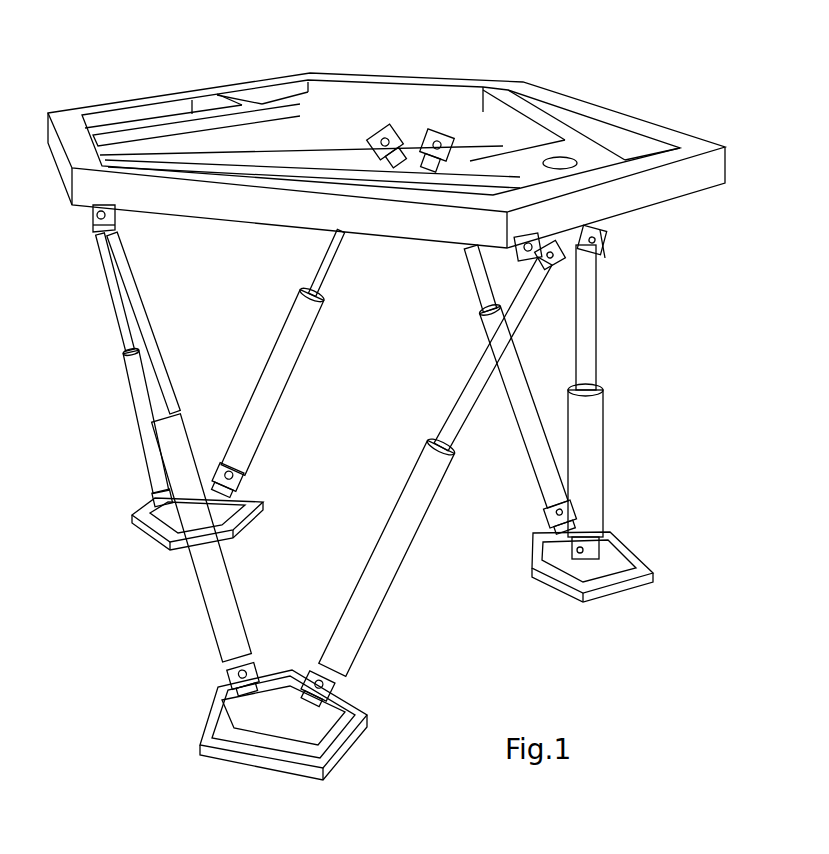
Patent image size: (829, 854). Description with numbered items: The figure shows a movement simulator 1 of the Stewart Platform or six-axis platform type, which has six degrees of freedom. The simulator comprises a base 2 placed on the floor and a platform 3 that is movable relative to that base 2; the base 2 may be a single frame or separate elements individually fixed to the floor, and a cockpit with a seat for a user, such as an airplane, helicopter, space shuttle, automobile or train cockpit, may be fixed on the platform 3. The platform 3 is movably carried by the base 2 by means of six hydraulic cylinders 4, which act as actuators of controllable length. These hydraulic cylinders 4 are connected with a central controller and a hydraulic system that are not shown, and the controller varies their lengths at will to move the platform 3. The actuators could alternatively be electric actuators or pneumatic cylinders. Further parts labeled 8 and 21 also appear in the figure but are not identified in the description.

The movement simulator 1 is at (652, 74).
The base 2 is at (132, 520).
The platform 3 is at (648, 128).
The hydraulic cylinders 4 is at (278, 363).
The upper joint brackets 8 is at (437, 145).
The lower joint brackets 21 is at (318, 690).